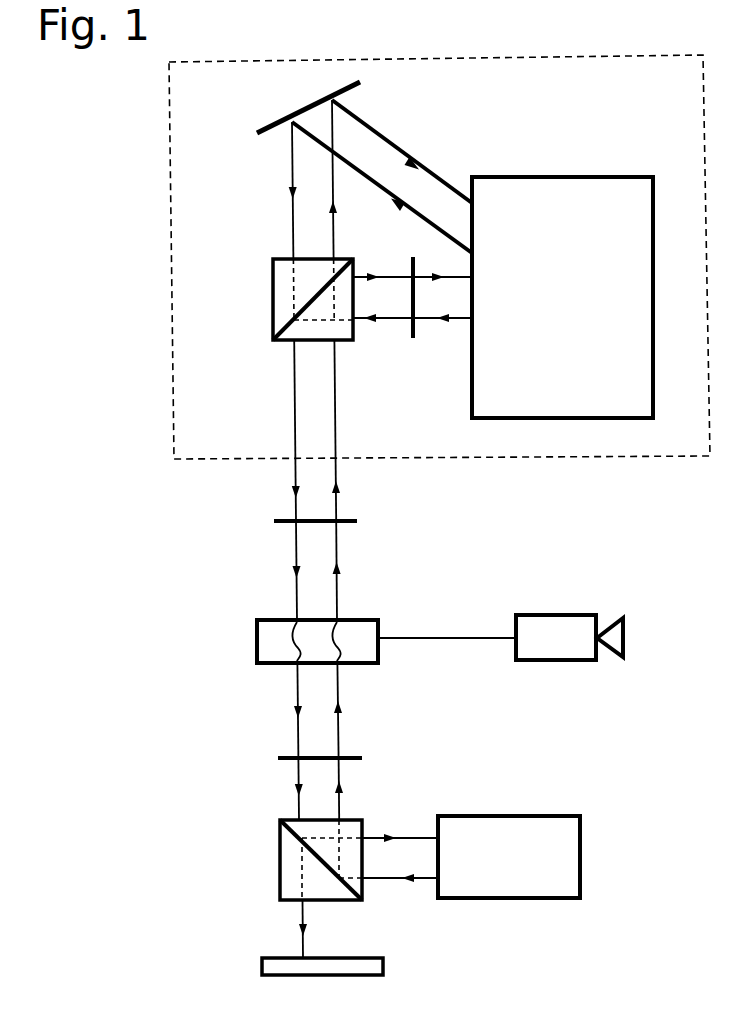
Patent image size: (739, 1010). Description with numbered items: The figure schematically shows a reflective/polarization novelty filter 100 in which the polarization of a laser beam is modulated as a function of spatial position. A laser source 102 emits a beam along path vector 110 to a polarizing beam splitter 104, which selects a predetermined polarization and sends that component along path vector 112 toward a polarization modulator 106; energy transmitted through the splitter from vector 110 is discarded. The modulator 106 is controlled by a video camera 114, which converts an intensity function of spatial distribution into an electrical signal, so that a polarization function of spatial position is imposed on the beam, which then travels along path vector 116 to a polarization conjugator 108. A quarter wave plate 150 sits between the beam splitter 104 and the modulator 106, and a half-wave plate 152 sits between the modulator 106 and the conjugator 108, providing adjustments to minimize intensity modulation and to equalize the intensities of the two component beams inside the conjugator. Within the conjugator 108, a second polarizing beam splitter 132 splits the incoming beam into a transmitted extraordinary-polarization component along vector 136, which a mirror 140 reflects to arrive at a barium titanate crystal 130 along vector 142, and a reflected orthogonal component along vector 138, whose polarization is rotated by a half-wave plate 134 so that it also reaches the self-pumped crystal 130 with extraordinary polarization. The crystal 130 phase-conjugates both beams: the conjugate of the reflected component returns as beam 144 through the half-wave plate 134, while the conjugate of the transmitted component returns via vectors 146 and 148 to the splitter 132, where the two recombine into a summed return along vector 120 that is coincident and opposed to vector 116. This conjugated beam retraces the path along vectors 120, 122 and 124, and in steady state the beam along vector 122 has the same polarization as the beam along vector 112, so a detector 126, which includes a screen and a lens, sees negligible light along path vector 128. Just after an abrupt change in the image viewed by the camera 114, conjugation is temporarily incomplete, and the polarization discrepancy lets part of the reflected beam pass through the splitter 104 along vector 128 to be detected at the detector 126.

The reflective/polarization novelty filter 100 is at (104, 153).
The laser source 102 is at (486, 887).
The polarizing beam splitter 104 is at (280, 887).
The polarization modulator 106 is at (257, 644).
The polarization conjugator 108 is at (540, 455).
The path vector 110 is at (373, 879).
The path vector 112 is at (340, 695).
The video camera 114 is at (530, 643).
The path vector 116 is at (337, 587).
The path vector 120 is at (296, 560).
The path vector 122 is at (298, 693).
The path vector 124 is at (417, 835).
The detector 126 is at (383, 965).
The path vector 128 is at (303, 950).
The barium titanate crystal 130 is at (540, 352).
The second polarizing beam splitter 132 is at (272, 313).
The half-wave plate 134 is at (413, 338).
The path vector 136 is at (332, 217).
The path vector 138 is at (388, 274).
The mirror 140 is at (303, 112).
The path vector 142 is at (387, 140).
The phase conjugated beam 144 is at (362, 320).
The path vector 146 is at (393, 192).
The path vector 148 is at (290, 190).
The quarter wave plate 150 is at (278, 758).
The half-wave plate 152 is at (357, 521).